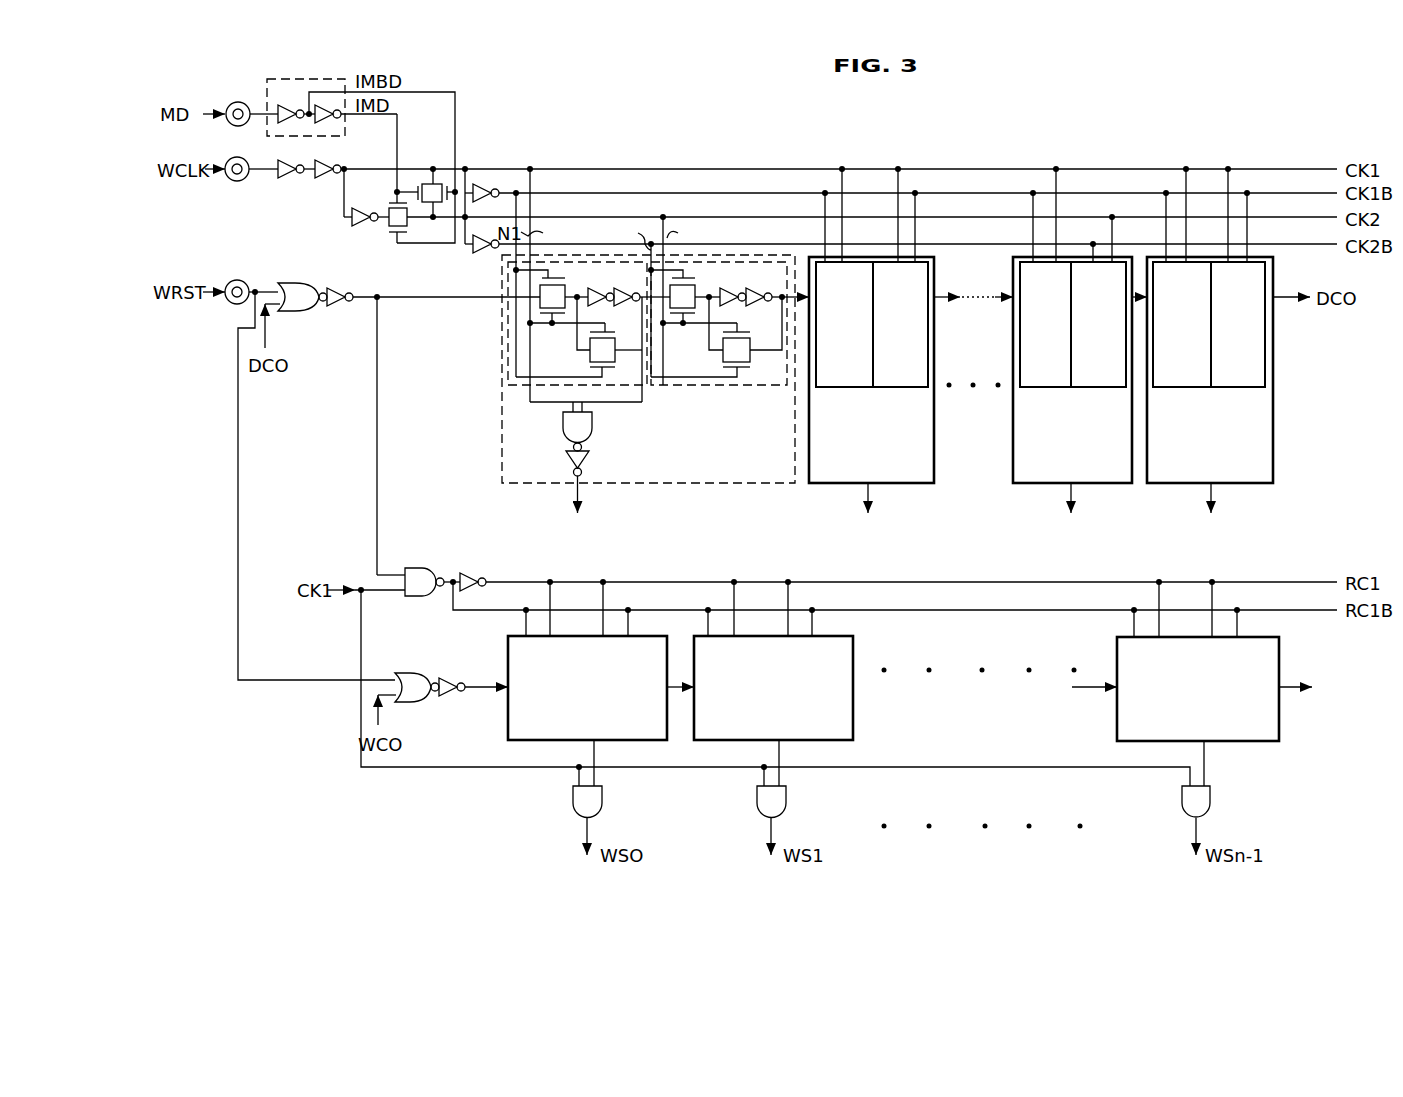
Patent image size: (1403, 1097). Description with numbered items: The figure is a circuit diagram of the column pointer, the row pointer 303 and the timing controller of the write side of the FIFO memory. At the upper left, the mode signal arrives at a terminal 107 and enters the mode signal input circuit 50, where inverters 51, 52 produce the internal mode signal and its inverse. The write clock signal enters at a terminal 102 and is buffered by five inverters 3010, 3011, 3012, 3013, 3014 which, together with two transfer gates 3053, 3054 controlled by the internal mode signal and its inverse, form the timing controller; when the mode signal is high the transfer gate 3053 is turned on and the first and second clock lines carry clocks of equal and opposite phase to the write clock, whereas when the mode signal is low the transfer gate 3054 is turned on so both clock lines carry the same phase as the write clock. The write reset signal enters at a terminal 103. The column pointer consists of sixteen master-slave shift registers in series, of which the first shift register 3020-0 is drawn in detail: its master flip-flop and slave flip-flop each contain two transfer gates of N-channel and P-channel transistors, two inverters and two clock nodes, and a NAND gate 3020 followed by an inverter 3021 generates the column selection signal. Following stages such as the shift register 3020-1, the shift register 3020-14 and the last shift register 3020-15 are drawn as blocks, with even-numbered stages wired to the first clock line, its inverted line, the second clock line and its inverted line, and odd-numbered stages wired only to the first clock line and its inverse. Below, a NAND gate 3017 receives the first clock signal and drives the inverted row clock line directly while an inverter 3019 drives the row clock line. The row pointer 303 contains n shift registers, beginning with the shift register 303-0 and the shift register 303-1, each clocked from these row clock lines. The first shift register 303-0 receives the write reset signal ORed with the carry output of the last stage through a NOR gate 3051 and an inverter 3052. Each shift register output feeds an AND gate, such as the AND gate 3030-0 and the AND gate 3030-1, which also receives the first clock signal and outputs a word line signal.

The terminal 107 is at (237, 101).
The mode signal input circuit 50 is at (309, 79).
The inverter 51 is at (280, 109).
The inverter 52 is at (328, 124).
The terminal 102 is at (240, 182).
The terminal 103 is at (243, 281).
The inverter 3010 is at (298, 159).
The inverter 3011 is at (327, 178).
The inverter 3012 is at (354, 228).
The inverter 3013 is at (483, 183).
The inverter 3014 is at (483, 255).
The transfer gate 3053 is at (402, 246).
The transfer gate 3054 is at (433, 183).
The NAND gate 3020 is at (568, 430).
The inverter 3021 is at (566, 460).
The shift register 3020-0 is at (655, 356).
The shift register 3020-1 is at (913, 483).
The shift register 3020-14 is at (1110, 483).
The shift register 3020-15 is at (1258, 483).
The NAND gate 3017 is at (426, 567).
The inverter 3019 is at (479, 571).
The NOR gate 3051 is at (409, 672).
The inverter 3052 is at (449, 678).
The row pointer 303 is at (975, 712).
The shift register 303-0 is at (508, 728).
The shift register 303-1 is at (853, 727).
The AND gate 3030-0 is at (573, 797).
The AND gate 3030-1 is at (786, 800).